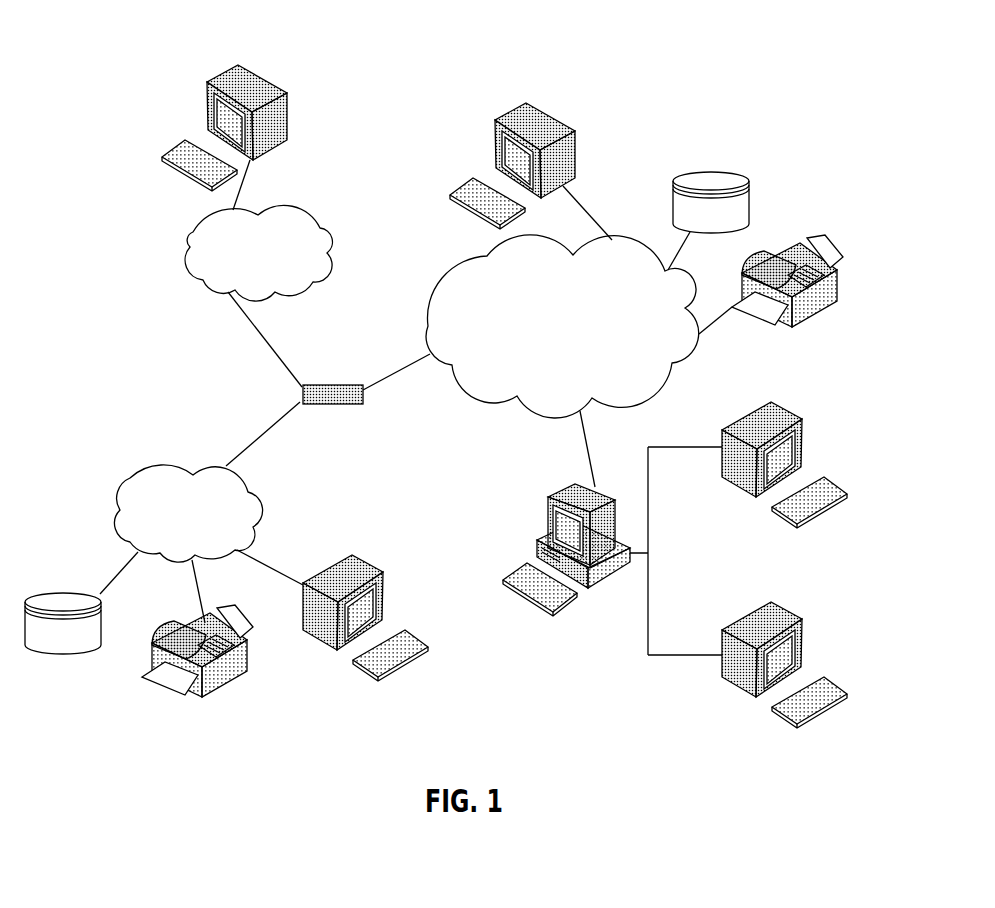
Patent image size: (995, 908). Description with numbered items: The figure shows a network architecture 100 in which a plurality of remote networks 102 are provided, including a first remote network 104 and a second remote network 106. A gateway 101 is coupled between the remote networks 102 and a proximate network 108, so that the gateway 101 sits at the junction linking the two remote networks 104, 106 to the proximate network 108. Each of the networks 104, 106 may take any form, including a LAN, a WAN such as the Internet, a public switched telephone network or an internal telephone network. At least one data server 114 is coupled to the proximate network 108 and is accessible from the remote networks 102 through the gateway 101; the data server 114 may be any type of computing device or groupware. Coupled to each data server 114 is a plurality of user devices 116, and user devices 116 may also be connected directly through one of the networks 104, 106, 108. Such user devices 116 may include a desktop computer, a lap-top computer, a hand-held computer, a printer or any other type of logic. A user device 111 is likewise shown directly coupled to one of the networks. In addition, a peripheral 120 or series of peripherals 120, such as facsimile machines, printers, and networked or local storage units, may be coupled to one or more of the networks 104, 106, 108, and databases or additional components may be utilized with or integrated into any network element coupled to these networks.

The architecture 100 is at (150, 52).
The gateway 101 is at (318, 384).
The remote networks 102 is at (175, 305).
The first remote network 104 is at (120, 492).
The second remote network 106 is at (322, 227).
The proximate network 108 is at (662, 388).
The user device 111 is at (577, 133).
The data server 114 is at (546, 509).
The user devices 116 is at (287, 102).
The peripheral 120 is at (752, 184).